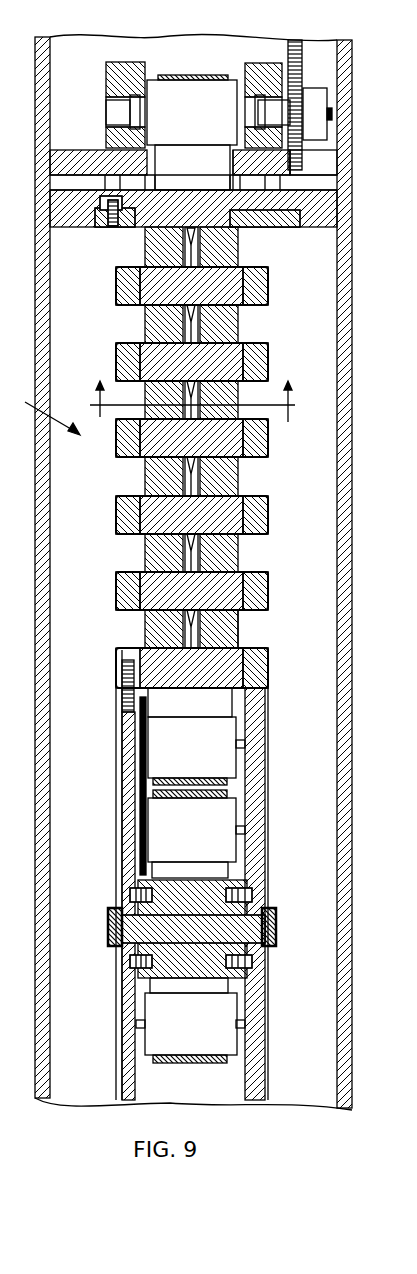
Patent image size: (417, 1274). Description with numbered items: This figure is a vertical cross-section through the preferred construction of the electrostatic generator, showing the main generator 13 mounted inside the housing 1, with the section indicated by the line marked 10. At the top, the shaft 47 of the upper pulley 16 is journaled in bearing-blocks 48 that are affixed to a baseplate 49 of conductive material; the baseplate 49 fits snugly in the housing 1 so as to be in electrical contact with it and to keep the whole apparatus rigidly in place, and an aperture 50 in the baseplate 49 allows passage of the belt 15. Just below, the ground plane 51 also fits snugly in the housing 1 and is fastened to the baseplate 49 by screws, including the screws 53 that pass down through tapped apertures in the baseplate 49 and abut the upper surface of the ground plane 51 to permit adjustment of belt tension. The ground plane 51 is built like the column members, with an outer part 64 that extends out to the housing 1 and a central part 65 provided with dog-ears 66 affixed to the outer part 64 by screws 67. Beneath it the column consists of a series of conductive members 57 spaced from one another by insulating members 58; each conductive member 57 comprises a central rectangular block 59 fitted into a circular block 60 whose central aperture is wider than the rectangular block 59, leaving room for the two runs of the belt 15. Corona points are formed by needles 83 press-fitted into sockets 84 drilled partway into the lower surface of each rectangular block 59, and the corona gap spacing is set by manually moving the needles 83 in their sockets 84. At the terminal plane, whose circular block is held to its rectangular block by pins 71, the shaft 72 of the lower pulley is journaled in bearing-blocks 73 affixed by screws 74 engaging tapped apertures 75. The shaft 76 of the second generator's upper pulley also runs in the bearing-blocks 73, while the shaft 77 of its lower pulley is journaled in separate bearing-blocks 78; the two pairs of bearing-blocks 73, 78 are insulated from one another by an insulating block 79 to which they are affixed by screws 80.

The housing 1 is at (352, 427).
The section line 10 is at (199, 395).
The main generator 13 is at (40, 412).
The belt 15 is at (218, 182).
The upper pulley 16 is at (166, 92).
The shaft 47 is at (283, 108).
The bearing-blocks 48 is at (262, 63).
The baseplate 49 is at (330, 165).
The aperture 50 is at (151, 160).
The ground plane 51 is at (337, 212).
The screws 53 is at (168, 171).
The conductive members 57 is at (266, 368).
The insulating members 58 is at (240, 488).
The rectangular block 59 is at (242, 610).
The circular block 60 is at (267, 580).
The outer part of ground plane 64 is at (318, 231).
The central part of ground plane 65 is at (279, 224).
The dog-ears 66 is at (101, 226).
The screws 67 is at (116, 229).
The pins 71 is at (126, 656).
The shaft 72 is at (240, 750).
The bearing-blocks 73 is at (265, 722).
The screws 74 is at (125, 668).
The tapped apertures 75 is at (125, 712).
The shaft 76 is at (240, 832).
The shaft 77 is at (240, 1025).
The bearing-blocks 78 is at (258, 985).
The insulating block 79 is at (258, 925).
The screws 80 is at (262, 897).
The needles 83 is at (193, 474).
The sockets 84 is at (193, 532).